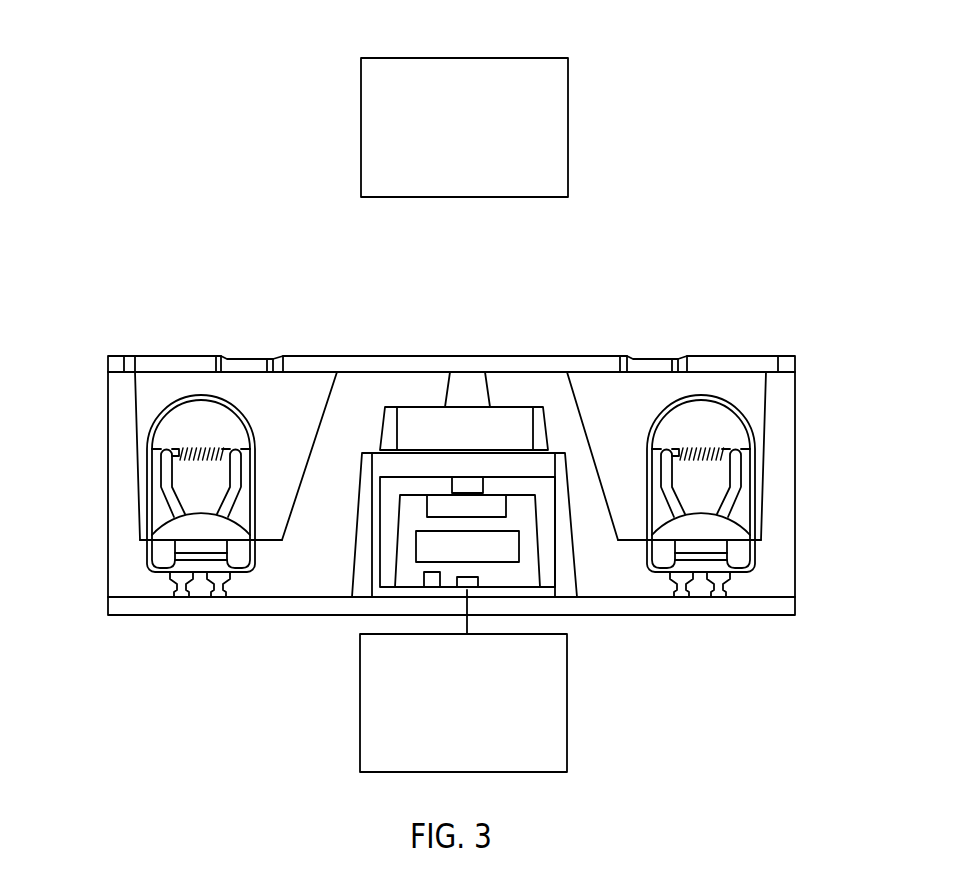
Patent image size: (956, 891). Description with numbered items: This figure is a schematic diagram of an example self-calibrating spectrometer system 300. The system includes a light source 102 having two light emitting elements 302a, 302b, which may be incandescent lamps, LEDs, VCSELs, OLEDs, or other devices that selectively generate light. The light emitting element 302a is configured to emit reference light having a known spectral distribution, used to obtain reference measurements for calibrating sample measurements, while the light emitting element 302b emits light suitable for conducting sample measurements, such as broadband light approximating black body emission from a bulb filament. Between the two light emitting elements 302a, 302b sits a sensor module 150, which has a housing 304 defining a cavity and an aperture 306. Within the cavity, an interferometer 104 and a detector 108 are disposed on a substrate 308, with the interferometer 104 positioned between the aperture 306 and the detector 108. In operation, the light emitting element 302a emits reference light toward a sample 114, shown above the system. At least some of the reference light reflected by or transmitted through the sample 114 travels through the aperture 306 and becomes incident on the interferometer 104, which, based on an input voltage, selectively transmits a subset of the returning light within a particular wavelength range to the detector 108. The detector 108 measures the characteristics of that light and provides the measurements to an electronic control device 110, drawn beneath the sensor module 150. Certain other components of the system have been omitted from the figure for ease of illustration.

The optical measurement system 300 is at (448, 446).
The light source 102 is at (210, 338).
The sensor module 150 is at (547, 343).
The aperture 306 is at (467, 351).
The interferometer 104 is at (500, 542).
The detector 108 is at (423, 580).
The substrate 308 is at (515, 592).
The housing 304 is at (135, 575).
The light emitting element 302a is at (150, 462).
The light emitting element 302b is at (755, 458).
The sample 114 is at (483, 157).
The electronic control device 110 is at (481, 749).